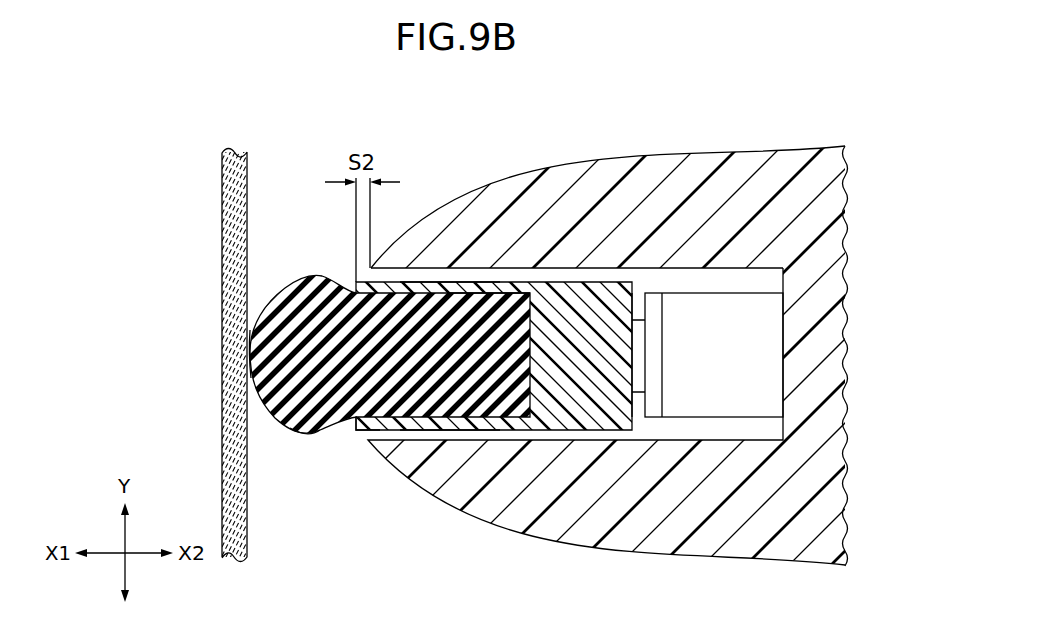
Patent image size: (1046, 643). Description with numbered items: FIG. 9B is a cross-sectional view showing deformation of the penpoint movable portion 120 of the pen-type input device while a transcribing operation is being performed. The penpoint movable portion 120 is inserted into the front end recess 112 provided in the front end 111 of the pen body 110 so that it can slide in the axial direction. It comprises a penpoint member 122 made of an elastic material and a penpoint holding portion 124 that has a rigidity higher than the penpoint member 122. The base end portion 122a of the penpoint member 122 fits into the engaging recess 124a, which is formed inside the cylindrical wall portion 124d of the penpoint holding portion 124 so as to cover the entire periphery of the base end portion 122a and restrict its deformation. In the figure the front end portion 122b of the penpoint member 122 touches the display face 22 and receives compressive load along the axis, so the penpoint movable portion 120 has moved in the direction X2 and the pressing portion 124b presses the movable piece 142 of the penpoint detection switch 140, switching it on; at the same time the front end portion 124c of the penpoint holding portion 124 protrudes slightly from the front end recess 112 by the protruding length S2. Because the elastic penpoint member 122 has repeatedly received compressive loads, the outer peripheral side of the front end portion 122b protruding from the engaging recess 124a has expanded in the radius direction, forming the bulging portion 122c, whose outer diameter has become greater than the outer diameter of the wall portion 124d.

The display face 22 is at (247, 197).
The pen body 110 is at (523, 321).
The front end 111 is at (375, 262).
The front end recess 112 is at (717, 277).
The penpoint movable portion 120 is at (438, 368).
The penpoint member 122 is at (389, 332).
The base end portion 122a is at (512, 292).
The front end portion 122b is at (250, 356).
The bulging portion 122c is at (311, 436).
The penpoint holding portion 124 is at (494, 368).
The engaging recess 124a is at (447, 296).
The pressing portion 124b is at (633, 378).
The front end portion 124c is at (357, 428).
The wall portion 124d is at (431, 431).
The penpoint detection switch 140 is at (753, 403).
The movable piece 142 is at (640, 377).